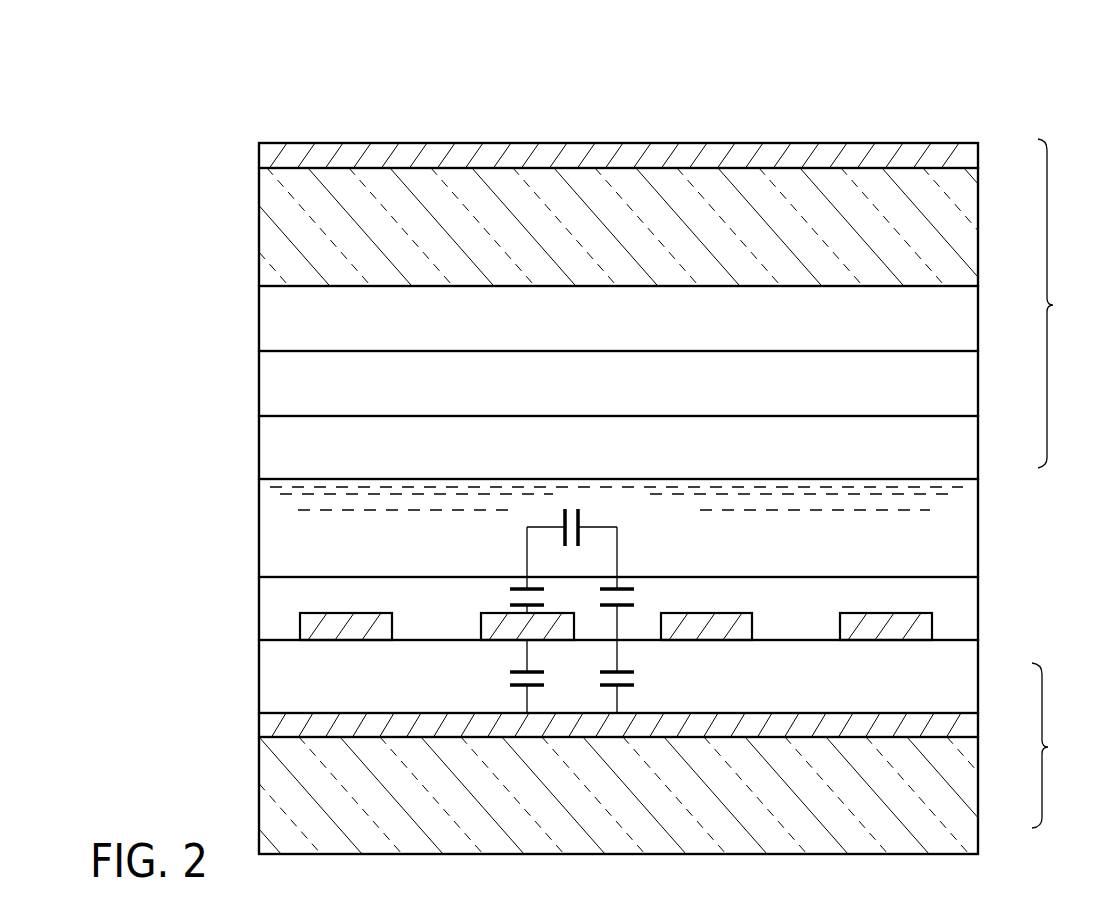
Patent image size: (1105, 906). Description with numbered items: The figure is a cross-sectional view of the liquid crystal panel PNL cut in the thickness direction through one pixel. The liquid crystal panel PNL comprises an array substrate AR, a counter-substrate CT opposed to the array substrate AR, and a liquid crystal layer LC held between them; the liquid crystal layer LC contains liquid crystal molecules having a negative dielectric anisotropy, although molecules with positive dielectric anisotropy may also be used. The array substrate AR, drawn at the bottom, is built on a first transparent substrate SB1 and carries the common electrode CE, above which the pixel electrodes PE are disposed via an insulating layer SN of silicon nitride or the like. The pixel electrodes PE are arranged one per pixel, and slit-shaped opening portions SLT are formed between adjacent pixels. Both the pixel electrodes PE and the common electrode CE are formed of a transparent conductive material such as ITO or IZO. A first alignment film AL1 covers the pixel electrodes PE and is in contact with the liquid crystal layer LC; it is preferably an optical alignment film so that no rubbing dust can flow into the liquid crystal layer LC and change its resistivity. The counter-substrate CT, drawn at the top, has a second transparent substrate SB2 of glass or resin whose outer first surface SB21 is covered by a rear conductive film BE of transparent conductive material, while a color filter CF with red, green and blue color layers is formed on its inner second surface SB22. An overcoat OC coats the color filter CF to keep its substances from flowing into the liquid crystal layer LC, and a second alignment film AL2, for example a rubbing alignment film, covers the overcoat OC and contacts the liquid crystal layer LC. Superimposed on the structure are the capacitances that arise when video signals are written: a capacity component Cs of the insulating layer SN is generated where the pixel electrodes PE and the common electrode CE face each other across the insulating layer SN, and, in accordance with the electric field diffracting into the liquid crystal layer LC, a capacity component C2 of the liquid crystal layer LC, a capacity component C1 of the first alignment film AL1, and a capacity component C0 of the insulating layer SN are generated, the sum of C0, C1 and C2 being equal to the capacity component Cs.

The liquid crystal panel PNL is at (980, 110).
The rear conductive film BE is at (968, 159).
The second transparent substrate SB2 is at (968, 230).
The first surface SB21 is at (291, 151).
The second surface SB22 is at (298, 288).
The color filter CF is at (968, 326).
The overcoat OC is at (968, 391).
The second alignment film AL2 is at (968, 458).
The counter-substrate CT is at (1064, 303).
The liquid crystal layer LC is at (968, 531).
The first alignment film AL1 is at (968, 615).
The pixel electrodes PE is at (342, 612).
The slit-shaped opening portions SLT is at (802, 638).
The insulating layer SN is at (968, 685).
The common electrode CE is at (968, 733).
The first transparent substrate SB1 is at (968, 810).
The array substrate AR is at (1059, 745).
The capacity component of the liquid crystal layer C2 is at (572, 536).
The capacity component of the first alignment film C1 is at (588, 608).
The capacity component of the insulating layer Cs is at (511, 676).
The capacity component of the insulating layer C0 is at (634, 676).